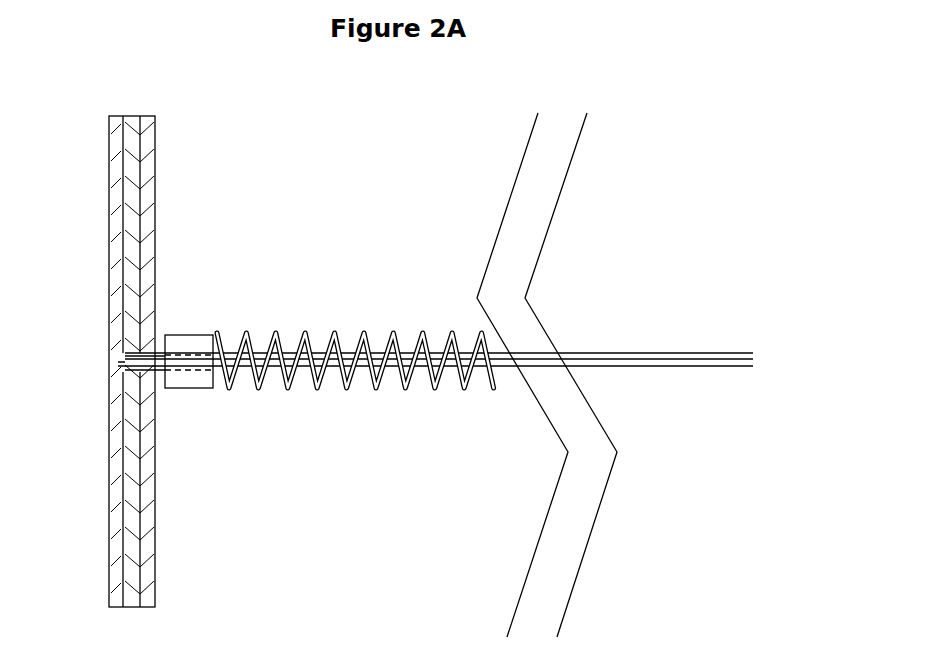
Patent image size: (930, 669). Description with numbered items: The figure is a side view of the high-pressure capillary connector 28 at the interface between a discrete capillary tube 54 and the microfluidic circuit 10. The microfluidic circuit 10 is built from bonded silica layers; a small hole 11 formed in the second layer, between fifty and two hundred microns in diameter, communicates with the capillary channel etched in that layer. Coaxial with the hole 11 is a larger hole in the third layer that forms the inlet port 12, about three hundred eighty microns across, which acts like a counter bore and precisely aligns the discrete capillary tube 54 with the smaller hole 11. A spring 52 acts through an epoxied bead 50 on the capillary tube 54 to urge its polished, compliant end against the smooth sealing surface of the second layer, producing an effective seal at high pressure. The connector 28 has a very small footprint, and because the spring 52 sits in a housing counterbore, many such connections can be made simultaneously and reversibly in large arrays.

The microfluidic circuit 10 is at (157, 217).
The hole 11 is at (126, 370).
The inlet port 12 is at (152, 373).
The high-pressure capillary connector 28 is at (353, 177).
The epoxied bead 50 is at (193, 335).
The spring 52 is at (336, 333).
The discrete capillary tube 54 is at (346, 390).